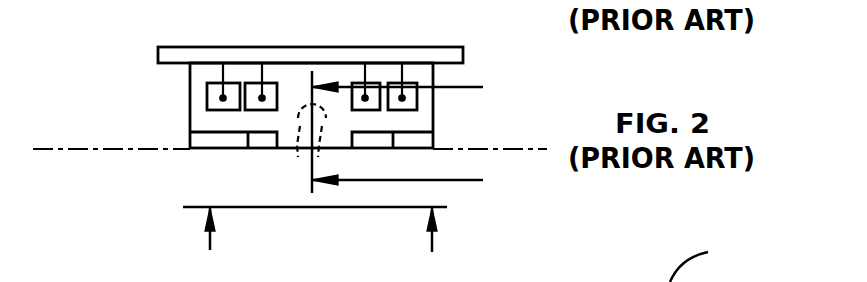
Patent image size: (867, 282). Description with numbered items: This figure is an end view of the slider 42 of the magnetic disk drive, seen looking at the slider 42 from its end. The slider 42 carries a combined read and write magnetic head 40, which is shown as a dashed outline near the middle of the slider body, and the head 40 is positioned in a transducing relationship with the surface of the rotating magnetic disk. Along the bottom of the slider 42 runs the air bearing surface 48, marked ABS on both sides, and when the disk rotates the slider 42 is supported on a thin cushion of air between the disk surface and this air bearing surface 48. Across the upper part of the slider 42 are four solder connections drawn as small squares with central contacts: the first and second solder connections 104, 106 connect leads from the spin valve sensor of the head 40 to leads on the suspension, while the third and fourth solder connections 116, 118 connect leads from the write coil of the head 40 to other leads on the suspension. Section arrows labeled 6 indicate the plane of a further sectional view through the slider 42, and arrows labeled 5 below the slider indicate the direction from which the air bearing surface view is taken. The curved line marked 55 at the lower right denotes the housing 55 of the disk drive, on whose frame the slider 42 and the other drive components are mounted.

The slider 42 is at (190, 97).
The first solder connection 104 is at (208, 87).
The third solder connection 116 is at (246, 86).
The fourth solder connection 118 is at (352, 86).
The second solder connection 106 is at (388, 86).
The magnetic head 40 is at (292, 158).
The air bearing surface 48 is at (82, 150).
The section line 6- 6 is at (409, 134).
The view direction 5 is at (315, 244).
The housing 55 is at (706, 262).